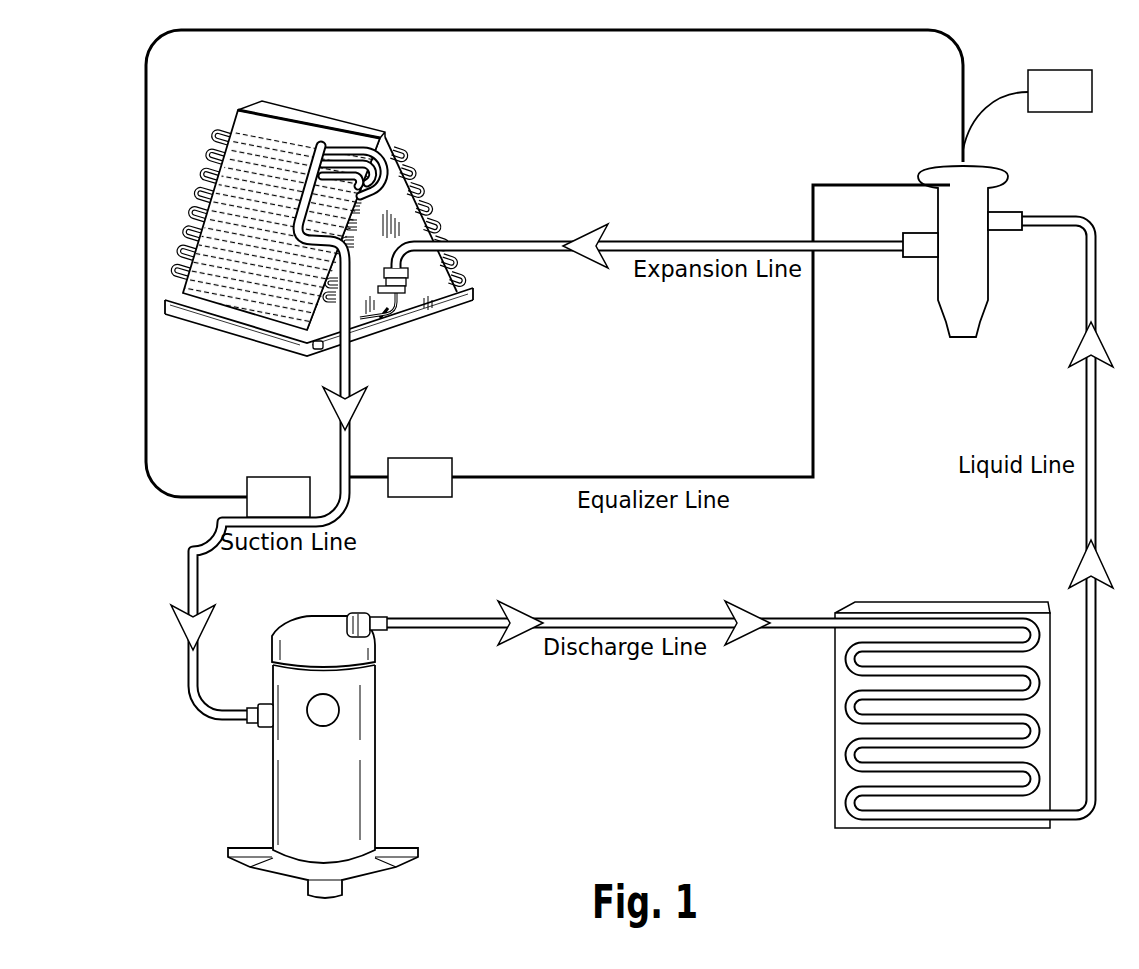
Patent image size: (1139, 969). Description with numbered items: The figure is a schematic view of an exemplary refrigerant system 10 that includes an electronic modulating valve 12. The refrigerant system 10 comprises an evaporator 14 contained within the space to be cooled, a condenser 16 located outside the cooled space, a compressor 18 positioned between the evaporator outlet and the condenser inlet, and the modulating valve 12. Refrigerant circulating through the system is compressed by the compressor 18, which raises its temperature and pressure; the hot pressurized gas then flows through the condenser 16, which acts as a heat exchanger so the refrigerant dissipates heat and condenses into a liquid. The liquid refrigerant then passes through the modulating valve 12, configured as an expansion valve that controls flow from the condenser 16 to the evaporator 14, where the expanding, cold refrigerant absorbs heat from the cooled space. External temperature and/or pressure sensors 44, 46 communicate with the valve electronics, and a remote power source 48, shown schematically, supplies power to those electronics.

The refrigerant system 10 is at (104, 82).
The electronic modulating valve 12 is at (1030, 170).
The evaporator 14 is at (455, 143).
The condenser 16 is at (920, 572).
The compressor 18 is at (366, 588).
The external temperature and/or pressure sensor 44 is at (278, 497).
The external temperature and/or pressure sensor 46 is at (420, 477).
The remote power source 48 is at (1027, 110).